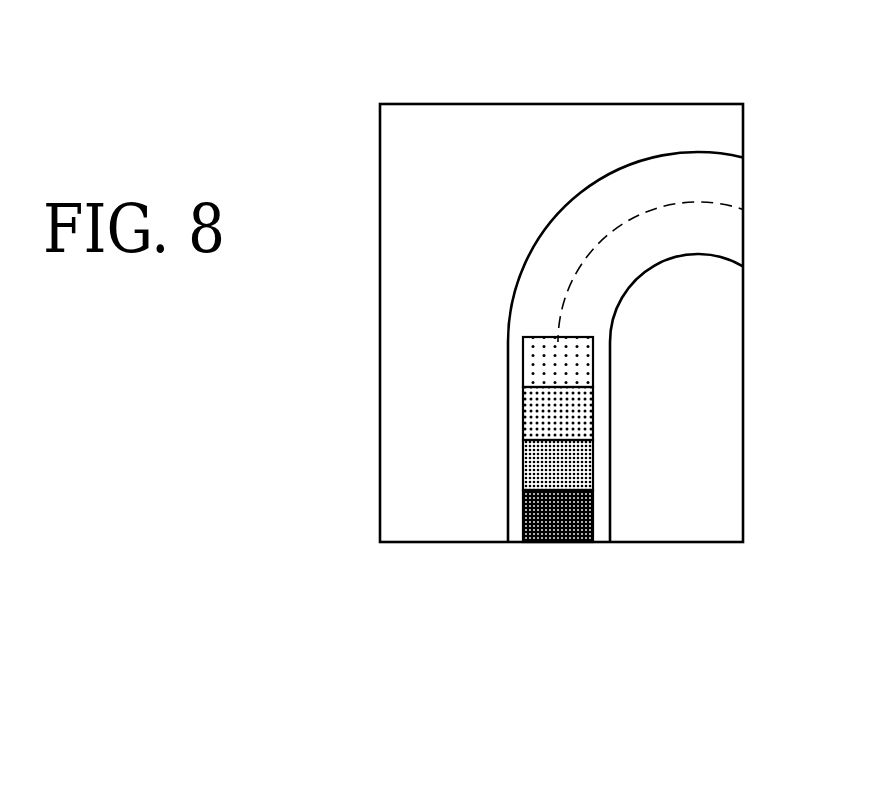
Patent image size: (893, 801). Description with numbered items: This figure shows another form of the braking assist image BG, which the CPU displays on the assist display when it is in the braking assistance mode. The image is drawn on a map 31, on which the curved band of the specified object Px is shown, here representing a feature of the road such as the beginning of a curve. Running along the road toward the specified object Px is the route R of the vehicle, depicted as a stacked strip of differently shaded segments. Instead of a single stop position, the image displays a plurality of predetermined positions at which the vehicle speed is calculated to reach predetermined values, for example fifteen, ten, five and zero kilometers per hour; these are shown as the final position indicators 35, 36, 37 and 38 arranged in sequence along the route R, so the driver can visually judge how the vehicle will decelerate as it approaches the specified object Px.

The braking assist image BG is at (445, 112).
The map 31 is at (445, 178).
The specified object Px is at (542, 232).
The route R is at (572, 439).
The final position indicator 38 is at (580, 362).
The final position indicator 37 is at (583, 414).
The final position indicator 36 is at (580, 465).
The final position indicator 35 is at (583, 517).